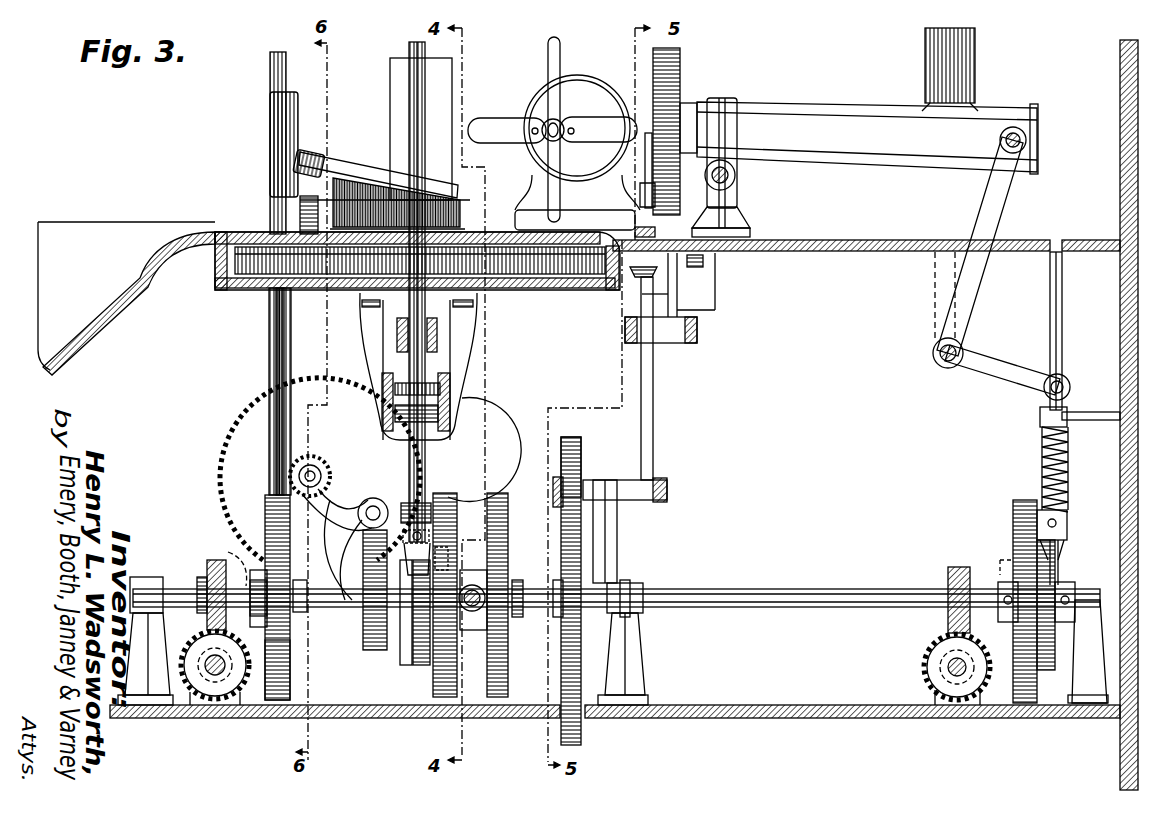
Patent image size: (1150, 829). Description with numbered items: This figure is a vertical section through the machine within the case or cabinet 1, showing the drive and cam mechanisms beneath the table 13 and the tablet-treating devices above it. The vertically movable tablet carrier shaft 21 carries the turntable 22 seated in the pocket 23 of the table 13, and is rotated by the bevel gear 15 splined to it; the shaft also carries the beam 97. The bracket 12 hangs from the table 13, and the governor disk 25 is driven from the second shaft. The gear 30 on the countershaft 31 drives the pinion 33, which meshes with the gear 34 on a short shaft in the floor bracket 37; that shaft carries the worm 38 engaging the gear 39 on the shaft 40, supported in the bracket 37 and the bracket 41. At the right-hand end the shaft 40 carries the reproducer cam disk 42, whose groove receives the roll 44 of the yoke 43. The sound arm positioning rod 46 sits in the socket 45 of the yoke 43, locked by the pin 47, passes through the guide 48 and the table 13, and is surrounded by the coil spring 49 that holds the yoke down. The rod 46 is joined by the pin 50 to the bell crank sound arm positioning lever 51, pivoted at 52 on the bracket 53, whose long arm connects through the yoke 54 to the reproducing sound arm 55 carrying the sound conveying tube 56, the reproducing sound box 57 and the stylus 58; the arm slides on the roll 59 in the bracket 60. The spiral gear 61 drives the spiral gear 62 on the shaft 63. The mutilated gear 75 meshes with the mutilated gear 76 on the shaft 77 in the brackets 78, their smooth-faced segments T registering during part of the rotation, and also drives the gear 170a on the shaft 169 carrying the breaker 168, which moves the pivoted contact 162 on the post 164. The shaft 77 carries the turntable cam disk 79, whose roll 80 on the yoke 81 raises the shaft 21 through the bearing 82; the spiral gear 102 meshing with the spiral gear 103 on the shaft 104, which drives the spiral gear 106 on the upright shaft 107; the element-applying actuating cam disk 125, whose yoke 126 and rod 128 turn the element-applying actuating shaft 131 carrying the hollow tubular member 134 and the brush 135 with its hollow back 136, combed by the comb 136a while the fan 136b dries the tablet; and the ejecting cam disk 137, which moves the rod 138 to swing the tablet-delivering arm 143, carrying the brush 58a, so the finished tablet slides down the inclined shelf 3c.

The case or cabinet 1 is at (1120, 132).
The inclined shelf 3c is at (92, 330).
The bracket 12 is at (455, 362).
The table 13 is at (780, 252).
The bevel gear 15 is at (392, 410).
The tablet carrier shaft 21 is at (420, 485).
The turntable 22 is at (222, 280).
The pocket 23 is at (545, 288).
The governor disk 25 is at (470, 424).
The gear 30 is at (246, 418).
The countershaft 31 is at (298, 480).
The pinion 33 is at (297, 467).
The gear 34 is at (345, 470).
The bracket 37 is at (391, 625).
The worm 38 is at (370, 504).
The gear 39 is at (385, 655).
The shaft 40 is at (885, 594).
The bracket 41 is at (1080, 676).
The reproducer cam disk 42 is at (1013, 520).
The yoke 43 is at (1050, 578).
The roll 44 is at (990, 575).
The socket 45 is at (1064, 544).
The sound arm positioning rod 46 is at (1062, 300).
The pin 47 is at (1067, 522).
The guide 48 is at (1040, 414).
The coil spring 49 is at (1042, 456).
The pin 50 is at (1068, 384).
The bell crank sound arm positioning lever 51 is at (1000, 364).
The pivot 52 is at (940, 360).
The bracket 53 is at (930, 304).
The yoke 54 is at (1000, 200).
The reproducing sound arm 55 is at (820, 112).
The sound conveying tube 56 is at (925, 47).
The reproducing sound box 57 is at (684, 76).
The stylus 58 is at (655, 200).
The brush 58a is at (655, 231).
The roll 59 is at (736, 180).
The bracket 60 is at (750, 212).
The spiral gear 61 is at (960, 567).
The spiral gear 62 is at (934, 648).
The shaft 63 is at (948, 666).
The mutilated gear 75 is at (584, 730).
The mutilated gear 76 is at (576, 625).
The shaft 77 is at (183, 586).
The brackets 78 is at (147, 647).
The turntable cam disk 79 is at (452, 512).
The roll 80 is at (448, 551).
The yoke 81 is at (418, 660).
The bearing 82 is at (402, 510).
The beam 97 is at (438, 334).
The spiral gear 102 is at (216, 558).
The spiral gear 103 is at (195, 675).
The shaft 104 is at (222, 672).
The spiral gear 106 is at (292, 684).
The upright shaft 107 is at (270, 74).
The element-applying actuating cam disk 125 is at (265, 521).
The yoke 126 is at (268, 620).
The rod 128 is at (252, 566).
The element-applying actuating shaft 131 is at (270, 337).
The hollow tubular member 134 is at (270, 140).
The brush 135 is at (458, 204).
The hollow back 136 is at (372, 170).
The comb 136a is at (300, 212).
The fan 136b is at (518, 129).
The ejecting cam disk 137 is at (560, 497).
The rod 138 is at (480, 606).
The tablet-delivering arm 143 is at (646, 263).
The pivoted contact 162 is at (622, 287).
The post 164 is at (690, 292).
The breaker 168 is at (653, 428).
The shaft 169 is at (667, 490).
The gear 170a is at (598, 438).
The smooth-faced segment T is at (570, 582).